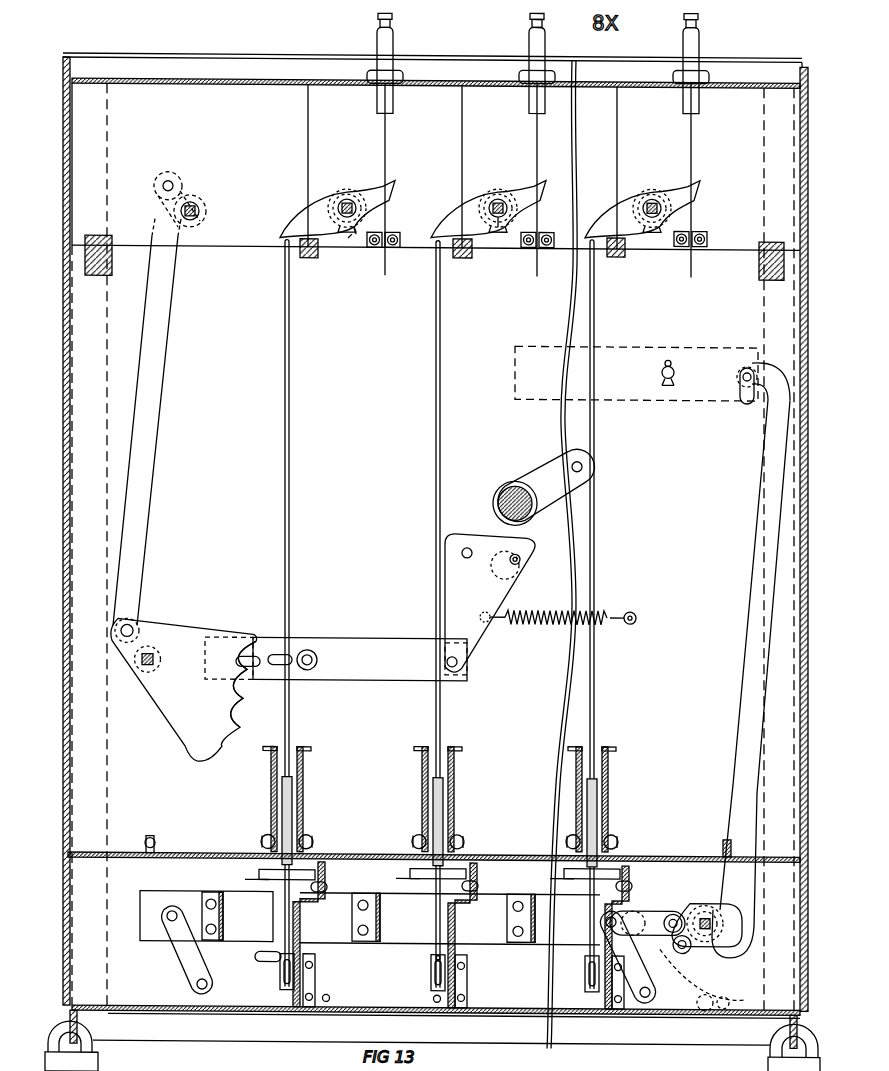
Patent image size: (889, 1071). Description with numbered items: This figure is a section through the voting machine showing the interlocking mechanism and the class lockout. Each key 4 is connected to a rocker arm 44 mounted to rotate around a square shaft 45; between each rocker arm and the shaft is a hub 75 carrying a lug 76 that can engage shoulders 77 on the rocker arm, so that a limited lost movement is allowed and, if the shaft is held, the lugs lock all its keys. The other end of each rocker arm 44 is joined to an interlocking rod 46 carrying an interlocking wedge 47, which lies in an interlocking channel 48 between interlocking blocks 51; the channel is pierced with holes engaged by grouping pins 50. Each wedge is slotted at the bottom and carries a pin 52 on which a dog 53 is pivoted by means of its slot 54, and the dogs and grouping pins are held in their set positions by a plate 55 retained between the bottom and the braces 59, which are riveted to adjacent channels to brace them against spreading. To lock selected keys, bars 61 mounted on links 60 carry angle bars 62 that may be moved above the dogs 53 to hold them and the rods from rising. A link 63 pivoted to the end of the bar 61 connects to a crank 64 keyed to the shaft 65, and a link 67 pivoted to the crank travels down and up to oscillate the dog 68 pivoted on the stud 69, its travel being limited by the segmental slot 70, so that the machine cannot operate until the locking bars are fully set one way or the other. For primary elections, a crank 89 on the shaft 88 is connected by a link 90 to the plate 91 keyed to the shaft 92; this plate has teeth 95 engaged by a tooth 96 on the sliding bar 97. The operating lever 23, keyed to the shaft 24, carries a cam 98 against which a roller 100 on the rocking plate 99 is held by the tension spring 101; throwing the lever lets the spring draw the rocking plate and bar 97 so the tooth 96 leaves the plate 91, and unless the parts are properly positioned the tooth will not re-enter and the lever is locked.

The key 4 is at (390, 43).
The operating lever 23 is at (536, 476).
The shaft 24 is at (509, 483).
The rocker arm 44 is at (470, 200).
The square shaft 45 is at (498, 222).
The interlocking rod 46 is at (436, 352).
The interlocking wedge 47 is at (287, 810).
The interlocking channel 48 is at (308, 860).
The grouping pin 50 is at (478, 886).
The interlocking block 51 is at (418, 878).
The pin 52 is at (310, 960).
The dog 53 is at (278, 968).
The slot 54 is at (268, 948).
The plate 55 is at (320, 884).
The brace 59 is at (200, 850).
The link 60 is at (182, 956).
The bar 61 is at (152, 902).
The angle bar 62 is at (224, 916).
The link 63 is at (652, 914).
The crank 64 is at (686, 900).
The shaft 65 is at (706, 912).
The link 67 is at (745, 645).
The dog 68 is at (694, 398).
The stud 69 is at (672, 362).
The segmental slot 70 is at (745, 400).
The hub 75 is at (347, 194).
The lug 76 is at (352, 234).
The shoulder 77 is at (360, 218).
The shaft 88 is at (200, 206).
The crank 89 is at (182, 180).
The link 90 is at (160, 348).
The plate 91 is at (190, 626).
The shaft 92 is at (147, 668).
The teeth 95 is at (232, 727).
The tooth 96 is at (254, 646).
The sliding bar 97 is at (338, 642).
The cam 98 is at (494, 500).
The rocking plate 99 is at (447, 563).
The roller 100 is at (532, 554).
The tension spring 101 is at (606, 618).